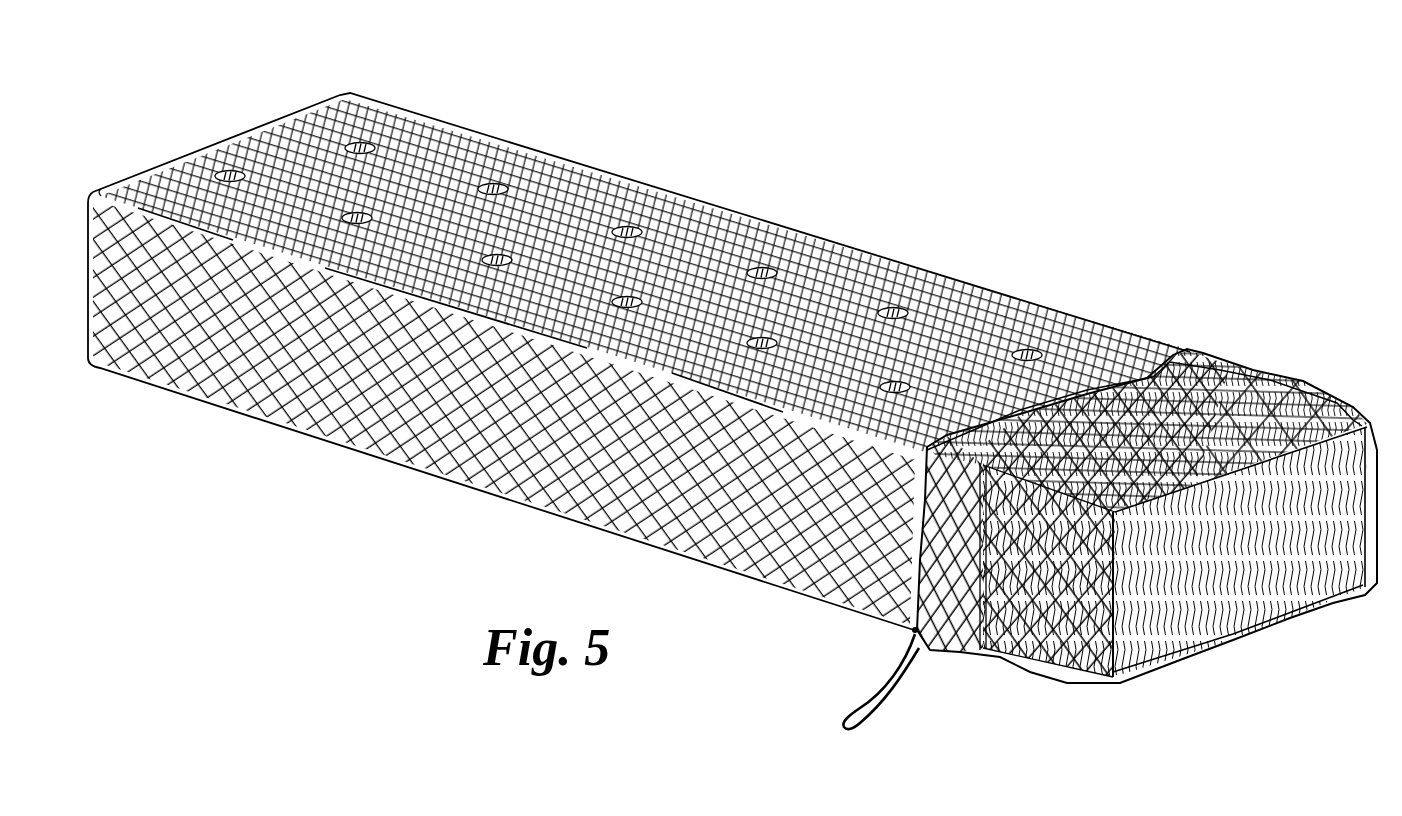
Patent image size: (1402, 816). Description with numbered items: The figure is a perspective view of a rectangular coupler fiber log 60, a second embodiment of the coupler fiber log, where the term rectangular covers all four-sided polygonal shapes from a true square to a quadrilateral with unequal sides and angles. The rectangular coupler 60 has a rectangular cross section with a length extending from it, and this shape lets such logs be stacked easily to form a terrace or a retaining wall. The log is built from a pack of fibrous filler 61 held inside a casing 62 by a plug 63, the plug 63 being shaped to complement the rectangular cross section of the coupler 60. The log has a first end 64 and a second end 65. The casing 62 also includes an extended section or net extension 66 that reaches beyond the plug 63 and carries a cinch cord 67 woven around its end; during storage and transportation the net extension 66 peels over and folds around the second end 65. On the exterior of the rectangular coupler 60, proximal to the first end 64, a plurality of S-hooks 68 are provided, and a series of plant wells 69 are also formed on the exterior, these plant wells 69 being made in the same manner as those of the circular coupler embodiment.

The rectangular coupler fiber log 60 is at (882, 166).
The pack of fibrous filler 61 is at (870, 286).
The casing 62 is at (563, 163).
The plug 63 is at (1212, 622).
The first end 64 is at (367, 120).
The second end 65 is at (1138, 364).
The net extension 66 is at (942, 612).
The cinch cord 67 is at (912, 624).
The S-hooks 68 is at (267, 378).
The plant wells 69 is at (228, 172).